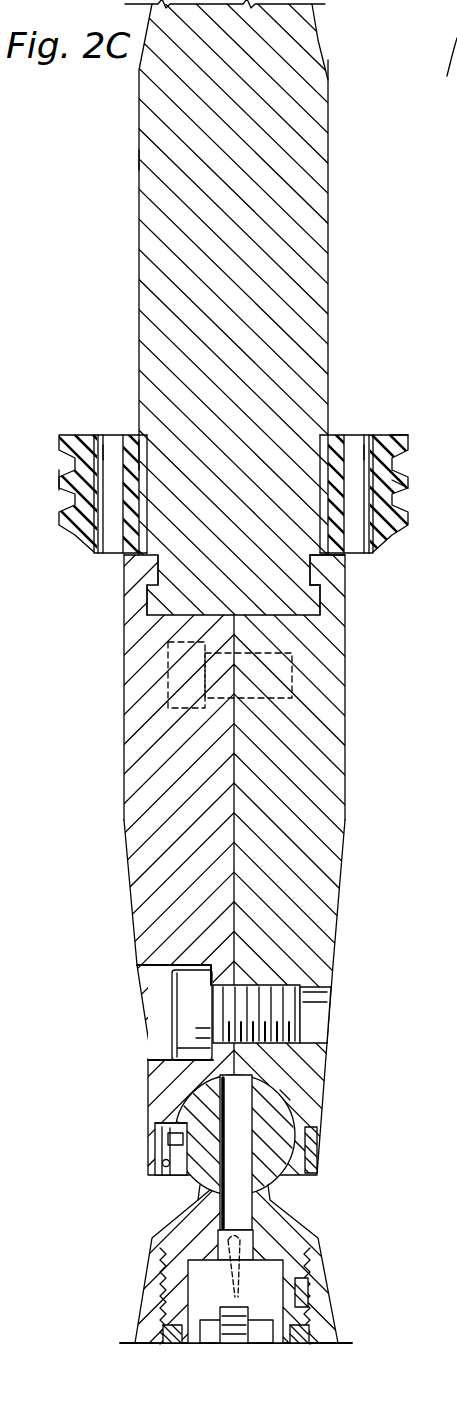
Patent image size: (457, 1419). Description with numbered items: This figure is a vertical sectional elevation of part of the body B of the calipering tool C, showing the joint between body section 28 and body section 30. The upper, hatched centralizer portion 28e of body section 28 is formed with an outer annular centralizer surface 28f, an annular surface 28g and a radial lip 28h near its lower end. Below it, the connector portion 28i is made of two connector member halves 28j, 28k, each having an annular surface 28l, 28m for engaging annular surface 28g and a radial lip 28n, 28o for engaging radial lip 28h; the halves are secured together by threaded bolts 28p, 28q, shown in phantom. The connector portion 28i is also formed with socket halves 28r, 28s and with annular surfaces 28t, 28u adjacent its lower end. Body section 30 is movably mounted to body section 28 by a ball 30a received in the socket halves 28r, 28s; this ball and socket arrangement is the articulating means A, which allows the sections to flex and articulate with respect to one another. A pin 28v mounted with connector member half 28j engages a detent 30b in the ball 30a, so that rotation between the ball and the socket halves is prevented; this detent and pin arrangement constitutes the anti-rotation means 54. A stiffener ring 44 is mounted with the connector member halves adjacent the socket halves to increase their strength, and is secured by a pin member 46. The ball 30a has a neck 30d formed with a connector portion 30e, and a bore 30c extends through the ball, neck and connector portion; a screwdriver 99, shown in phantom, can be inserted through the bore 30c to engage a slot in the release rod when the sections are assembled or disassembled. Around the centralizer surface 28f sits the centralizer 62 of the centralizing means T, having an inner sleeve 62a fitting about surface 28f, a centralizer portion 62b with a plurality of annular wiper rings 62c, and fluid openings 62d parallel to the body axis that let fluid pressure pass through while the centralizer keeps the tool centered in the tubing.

The body section 28 is at (331, 154).
The centralizer portion 28e is at (313, 114).
The outer annular centralizer surface 28f is at (330, 444).
The annular surface 28g is at (319, 568).
The radial lip 28h is at (320, 578).
The connector portion 28i is at (334, 656).
The connector member half 28j is at (140, 742).
The connector member half 28k is at (329, 864).
The annular surface 28l is at (160, 566).
The annular surface 28m is at (303, 548).
The radial lip 28n is at (147, 597).
The radial lip 28o is at (321, 600).
The threaded bolt 28p is at (168, 672).
The threaded bolt 28q is at (186, 990).
The socket half 28r is at (162, 1100).
The socket half 28s is at (284, 1097).
The annular surface 28t is at (160, 1138).
The annular surface 28u is at (319, 1134).
The pin 28v is at (160, 1121).
The body section 30 is at (301, 1222).
The ball 30a is at (276, 1104).
The detent 30b is at (165, 1150).
The bore 30c is at (256, 1200).
The neck 30d is at (192, 1192).
The connector portion 30e is at (188, 1280).
The stiffener ring 44 is at (320, 1156).
The pin member 46 is at (163, 1166).
The anti-rotation means 54 is at (167, 1141).
The centralizer 62 is at (412, 447).
The inner sleeve 62a is at (136, 448).
The centralizer portion 62b is at (395, 487).
The annular wiper ring 62c is at (58, 478).
The fluid opening 62d is at (112, 450).
The screwdriver 99 is at (233, 1297).
The articulating means A is at (276, 1084).
The body B is at (137, 160).
The calipering tool C is at (350, 62).
The centralizing means T is at (398, 430).